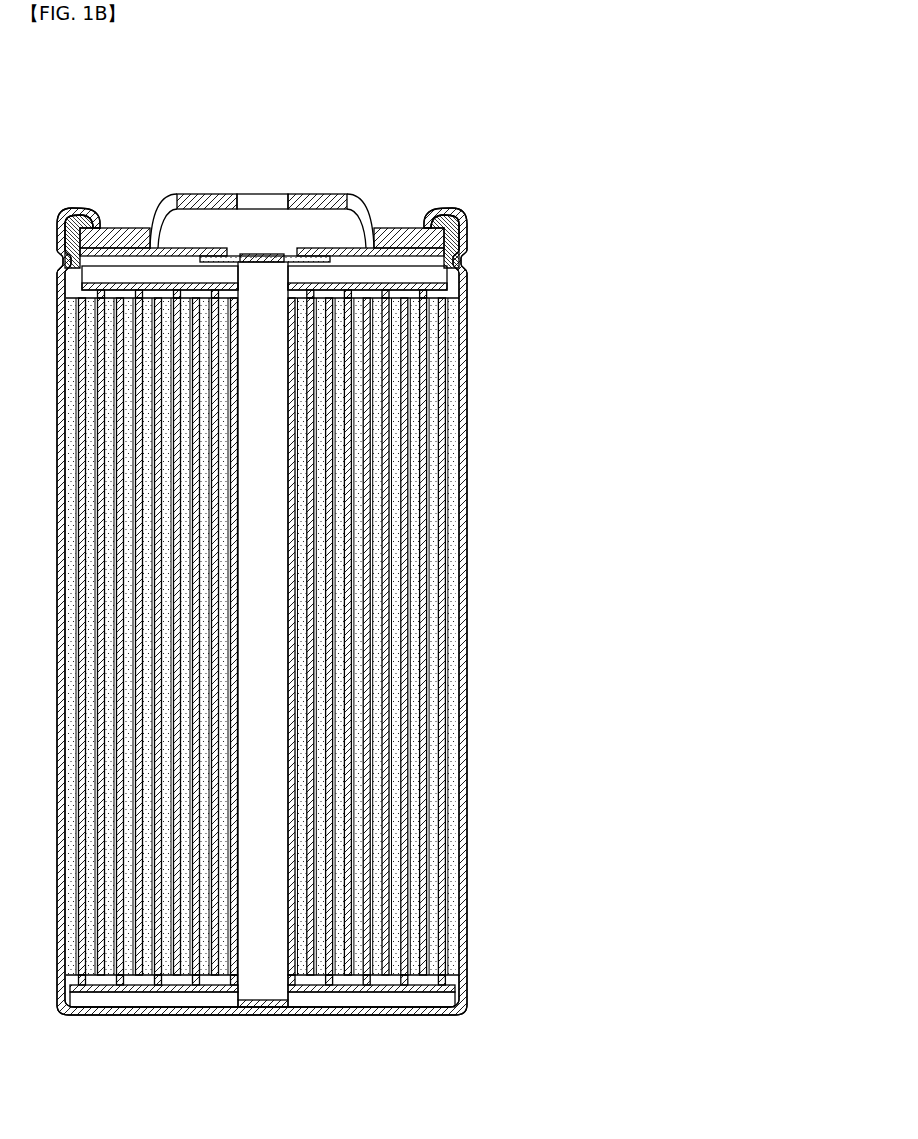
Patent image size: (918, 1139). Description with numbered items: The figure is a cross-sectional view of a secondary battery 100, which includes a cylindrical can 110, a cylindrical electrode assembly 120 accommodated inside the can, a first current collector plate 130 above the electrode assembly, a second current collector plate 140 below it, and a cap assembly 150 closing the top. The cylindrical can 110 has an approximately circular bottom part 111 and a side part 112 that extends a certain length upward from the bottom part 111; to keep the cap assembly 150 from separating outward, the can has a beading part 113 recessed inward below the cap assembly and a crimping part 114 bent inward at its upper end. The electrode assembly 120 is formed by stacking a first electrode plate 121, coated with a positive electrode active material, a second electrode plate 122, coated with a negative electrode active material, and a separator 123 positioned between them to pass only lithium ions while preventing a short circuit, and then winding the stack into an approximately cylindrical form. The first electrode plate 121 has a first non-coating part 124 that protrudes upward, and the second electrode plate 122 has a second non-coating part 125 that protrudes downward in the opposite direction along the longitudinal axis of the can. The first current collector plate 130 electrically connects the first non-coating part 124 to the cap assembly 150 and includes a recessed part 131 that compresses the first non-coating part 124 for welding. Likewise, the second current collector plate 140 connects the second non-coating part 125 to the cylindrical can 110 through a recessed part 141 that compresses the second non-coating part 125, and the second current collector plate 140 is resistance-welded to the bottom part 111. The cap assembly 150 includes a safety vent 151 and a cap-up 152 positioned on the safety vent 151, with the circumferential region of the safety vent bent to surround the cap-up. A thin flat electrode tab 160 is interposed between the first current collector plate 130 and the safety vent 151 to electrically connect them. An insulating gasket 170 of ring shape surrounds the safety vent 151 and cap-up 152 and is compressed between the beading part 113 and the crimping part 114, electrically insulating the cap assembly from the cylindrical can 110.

The secondary battery 100 is at (563, 148).
The cylindrical can 110 is at (347, 618).
The bottom part 111 is at (412, 1018).
The side part 112 is at (463, 960).
The beading part 113 is at (476, 262).
The crimping part 114 is at (445, 210).
The electrode assembly 120 is at (351, 636).
The first electrode plate 121 is at (562, 522).
The second electrode plate 122 is at (451, 471).
The separator 123 is at (437, 508).
The first non-coating part 124 is at (446, 297).
The second non-coating part 125 is at (386, 985).
The first current collector plate 130 is at (458, 281).
The recessed part 131 is at (409, 283).
The second current collector plate 140 is at (262, 1040).
The recessed part 141 is at (205, 992).
The cap assembly 150 is at (262, 187).
The safety vent 151 is at (180, 245).
The cap-up 152 is at (342, 192).
The electrode tab 160 is at (258, 262).
The insulating gasket 170 is at (465, 219).